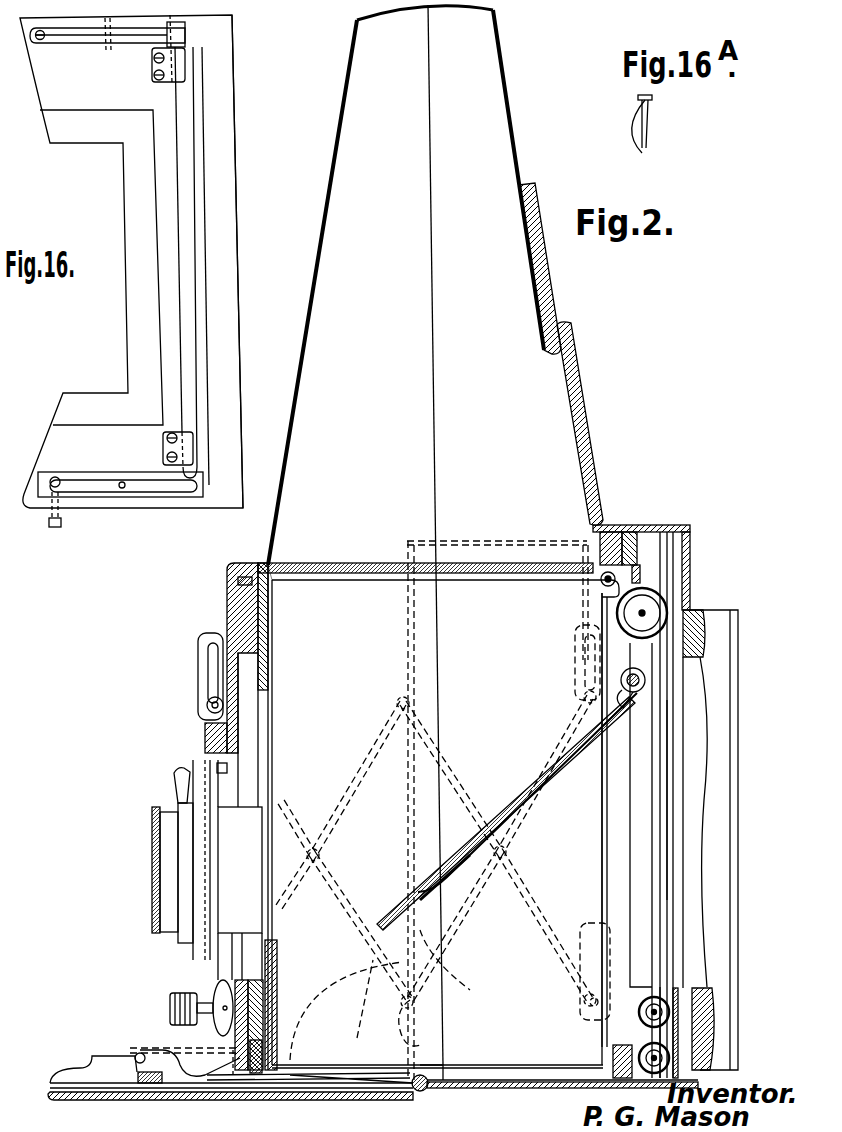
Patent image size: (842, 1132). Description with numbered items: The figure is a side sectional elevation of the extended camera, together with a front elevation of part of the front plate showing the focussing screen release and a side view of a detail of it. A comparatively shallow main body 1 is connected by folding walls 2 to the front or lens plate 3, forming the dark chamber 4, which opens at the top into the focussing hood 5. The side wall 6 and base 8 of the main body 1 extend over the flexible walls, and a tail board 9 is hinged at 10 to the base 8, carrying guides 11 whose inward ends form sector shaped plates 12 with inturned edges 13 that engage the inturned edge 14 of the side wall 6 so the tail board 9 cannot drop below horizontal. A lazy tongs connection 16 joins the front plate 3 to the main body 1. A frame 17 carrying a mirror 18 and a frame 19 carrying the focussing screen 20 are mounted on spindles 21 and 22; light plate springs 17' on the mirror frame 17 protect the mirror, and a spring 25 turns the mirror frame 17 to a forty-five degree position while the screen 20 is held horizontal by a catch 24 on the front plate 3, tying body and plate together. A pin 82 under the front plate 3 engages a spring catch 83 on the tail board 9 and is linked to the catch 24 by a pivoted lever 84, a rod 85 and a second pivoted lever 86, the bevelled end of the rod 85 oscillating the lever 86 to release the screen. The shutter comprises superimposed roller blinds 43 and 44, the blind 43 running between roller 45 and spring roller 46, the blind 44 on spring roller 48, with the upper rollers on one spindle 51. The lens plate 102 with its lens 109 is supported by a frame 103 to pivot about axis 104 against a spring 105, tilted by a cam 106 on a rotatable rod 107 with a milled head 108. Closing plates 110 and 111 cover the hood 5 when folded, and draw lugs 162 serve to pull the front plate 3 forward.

In FIG. 2, the main body 1 is at (650, 525).
In FIG. 2, the folding walls 2 is at (553, 597).
In FIG. 16, the front or lens plate 3 is at (225, 261).
In FIG. 2, the front or lens plate 3 is at (225, 596).
In FIG. 2, the dark chamber 4 is at (439, 810).
In FIG. 2, the focussing hood 5 is at (406, 535).
In FIG. 2, the side wall 6 is at (557, 537).
In FIG. 2, the base 8 is at (500, 1085).
In FIG. 2, the tail board 9 is at (365, 1093).
In FIG. 2, the hinge 10 is at (421, 1091).
In FIG. 2, the guides 11 is at (103, 1067).
In FIG. 2, the sector shaped plates 12 is at (357, 1038).
In FIG. 2, the inturned edges 13 is at (415, 1000).
In FIG. 2, the inturned edge 14 is at (420, 930).
In FIG. 2, the lazy tongs or trellis connection 16 is at (352, 785).
In FIG. 2, the mirror frame 17 is at (594, 792).
In FIG. 2, the light plate springs 17' is at (420, 865).
In FIG. 2, the mirror 18 is at (533, 757).
In FIG. 2, the screen frame 19 is at (378, 577).
In FIG. 2, the focussing screen 20 is at (307, 565).
In FIG. 2, the mirror spindle 21 is at (643, 675).
In FIG. 2, the spindle 22 is at (615, 577).
In FIG. 16, the catch 24 is at (41, 42).
In FIG. 2, the catch 24 is at (267, 563).
In FIG. 2, the spring 25 is at (630, 703).
In FIG. 2, the roller blind 43 is at (675, 835).
In FIG. 2, the roller blind 44 is at (660, 818).
In FIG. 2, the roller 45 is at (645, 613).
In FIG. 2, the spring roller 46 is at (658, 1058).
In FIG. 2, the spring roller 48 is at (658, 1012).
In FIG. 2, the spindle 51 is at (652, 603).
In FIG. 16, the pin 82 is at (50, 522).
In FIG. 2, the pin 82 is at (257, 1068).
In FIG. 2, the spring catch 83 is at (237, 1077).
In FIG. 16, the pivoted lever 84 is at (112, 487).
In FIG. 16, the rod 85 is at (187, 330).
In FIG. 16A, the rod 85 is at (647, 122).
In FIG. 16, the second pivoted lever 86 is at (97, 44).
In FIG. 16A, the second pivoted lever 86 is at (650, 136).
In FIG. 2, the second pivoted lever 86 is at (228, 580).
In FIG. 2, the lens plate 102 is at (205, 767).
In FIG. 2, the frame 103 is at (207, 737).
In FIG. 2, the pivotal axis 104 is at (203, 850).
In FIG. 2, the spring 105 is at (220, 777).
In FIG. 2, the cam 106 is at (183, 1085).
In FIG. 2, the rotatable rod 107 is at (213, 997).
In FIG. 2, the milled head 108 is at (170, 1003).
In FIG. 2, the lens 109 is at (172, 823).
In FIG. 2, the closing or reinforcing plate 110 is at (580, 403).
In FIG. 2, the closing or reinforcing plate 111 is at (550, 297).
In FIG. 2, the draw lugs 162 is at (163, 1050).